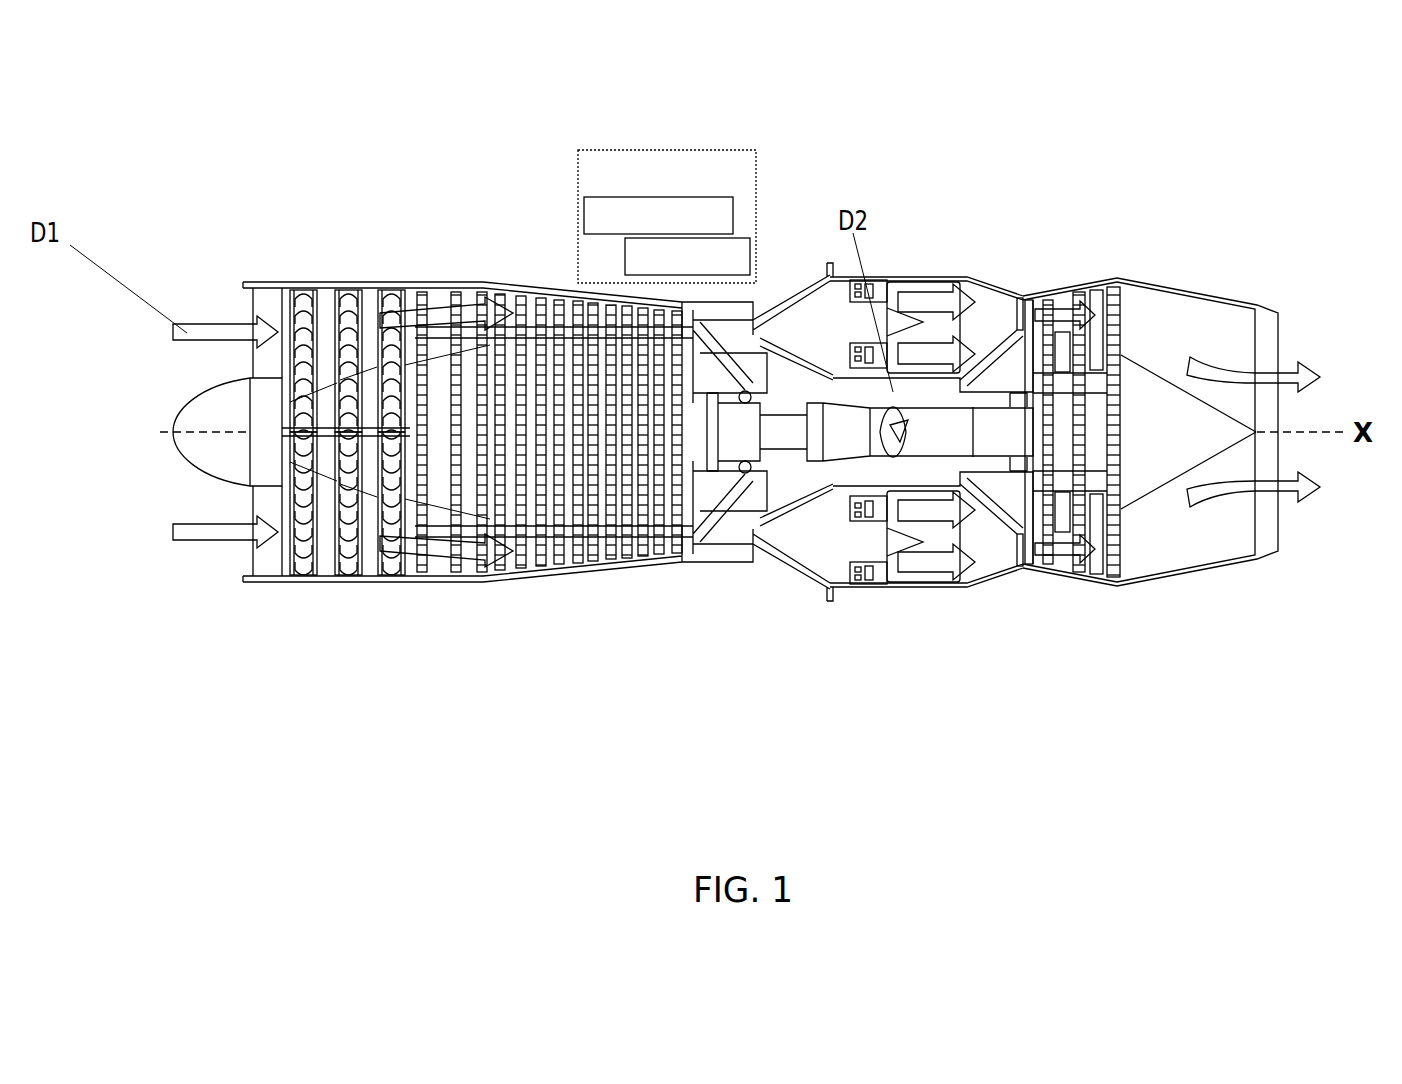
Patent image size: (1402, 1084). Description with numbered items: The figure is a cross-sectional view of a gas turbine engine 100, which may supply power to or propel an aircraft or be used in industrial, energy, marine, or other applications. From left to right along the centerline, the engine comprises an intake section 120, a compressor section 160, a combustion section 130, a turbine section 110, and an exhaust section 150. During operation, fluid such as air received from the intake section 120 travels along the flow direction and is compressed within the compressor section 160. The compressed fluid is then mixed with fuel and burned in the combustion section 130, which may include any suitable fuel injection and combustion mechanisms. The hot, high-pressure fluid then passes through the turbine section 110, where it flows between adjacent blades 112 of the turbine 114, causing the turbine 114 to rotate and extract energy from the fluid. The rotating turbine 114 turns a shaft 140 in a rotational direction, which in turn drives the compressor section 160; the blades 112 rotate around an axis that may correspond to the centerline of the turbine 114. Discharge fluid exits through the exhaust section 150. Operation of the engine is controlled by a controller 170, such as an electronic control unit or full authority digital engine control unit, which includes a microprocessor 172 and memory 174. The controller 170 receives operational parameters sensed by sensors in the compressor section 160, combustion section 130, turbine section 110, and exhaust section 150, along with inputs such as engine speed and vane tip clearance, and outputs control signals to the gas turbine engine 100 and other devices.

The gas turbine engine 100 is at (802, 642).
The turbine section 110 is at (1087, 287).
The blades 112 is at (1117, 407).
The turbine 114 is at (1140, 450).
The intake section 120 is at (229, 568).
The combustion section 130 is at (983, 310).
The shaft 140 is at (945, 433).
The exhaust section 150 is at (1270, 347).
The compressor section 160 is at (537, 283).
The controller 170 is at (697, 150).
The microprocessor 172 is at (588, 197).
The memory 174 is at (742, 238).